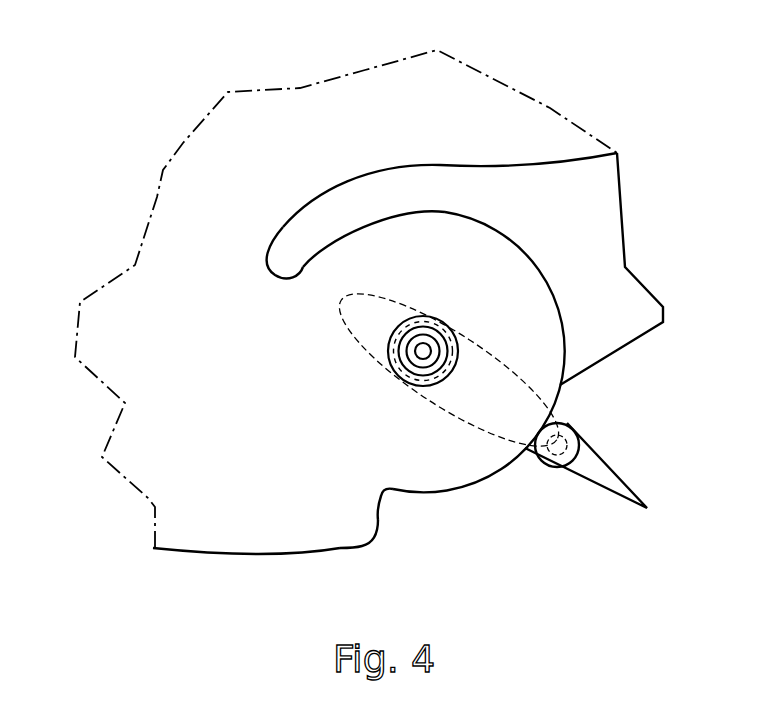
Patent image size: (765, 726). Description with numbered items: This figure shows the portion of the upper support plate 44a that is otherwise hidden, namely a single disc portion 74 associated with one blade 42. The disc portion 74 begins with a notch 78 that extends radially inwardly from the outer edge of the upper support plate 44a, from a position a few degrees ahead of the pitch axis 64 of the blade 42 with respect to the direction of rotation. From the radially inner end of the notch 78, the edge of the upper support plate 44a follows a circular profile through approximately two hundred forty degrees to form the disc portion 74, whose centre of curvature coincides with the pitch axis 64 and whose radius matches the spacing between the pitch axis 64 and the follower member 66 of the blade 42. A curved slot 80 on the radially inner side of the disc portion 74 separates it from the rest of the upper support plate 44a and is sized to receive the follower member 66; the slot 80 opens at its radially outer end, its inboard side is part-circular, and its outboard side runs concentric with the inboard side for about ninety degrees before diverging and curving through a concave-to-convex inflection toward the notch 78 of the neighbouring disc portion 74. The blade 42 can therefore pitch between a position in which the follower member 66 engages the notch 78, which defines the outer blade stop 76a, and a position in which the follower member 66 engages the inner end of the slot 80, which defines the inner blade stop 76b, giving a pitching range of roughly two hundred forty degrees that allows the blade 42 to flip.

The upper support plate 44a is at (309, 159).
The curved slot 80 is at (462, 197).
The disc portion 74 is at (475, 289).
The pitch axis 64 is at (423, 351).
The follower member 66 is at (558, 446).
The blade 42 is at (602, 478).
The outer blade stop 76a is at (394, 511).
The inner blade stop 76b is at (268, 283).
The notch 78 is at (376, 523).